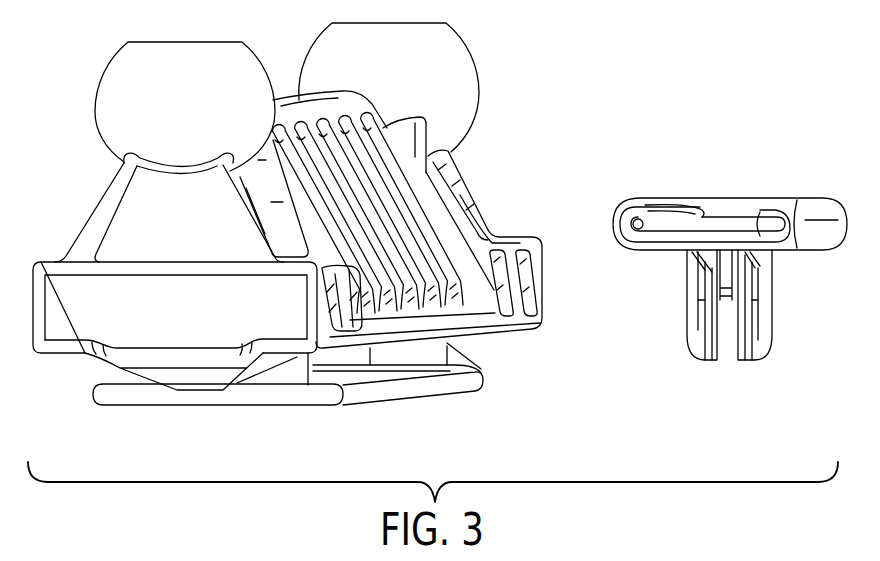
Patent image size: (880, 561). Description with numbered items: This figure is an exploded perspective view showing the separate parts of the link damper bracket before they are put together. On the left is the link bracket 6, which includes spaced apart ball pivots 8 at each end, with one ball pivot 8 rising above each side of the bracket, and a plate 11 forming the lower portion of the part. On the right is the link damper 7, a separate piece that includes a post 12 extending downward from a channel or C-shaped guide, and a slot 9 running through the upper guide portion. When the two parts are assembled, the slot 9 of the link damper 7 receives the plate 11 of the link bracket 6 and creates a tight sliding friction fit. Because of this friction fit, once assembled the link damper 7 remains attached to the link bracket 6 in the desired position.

The link bracket 6 is at (488, 181).
The link damper 7 is at (731, 227).
The ball pivots 8 is at (102, 121).
The slot 9 is at (773, 226).
The plate 11 is at (406, 390).
The post 12 is at (767, 307).